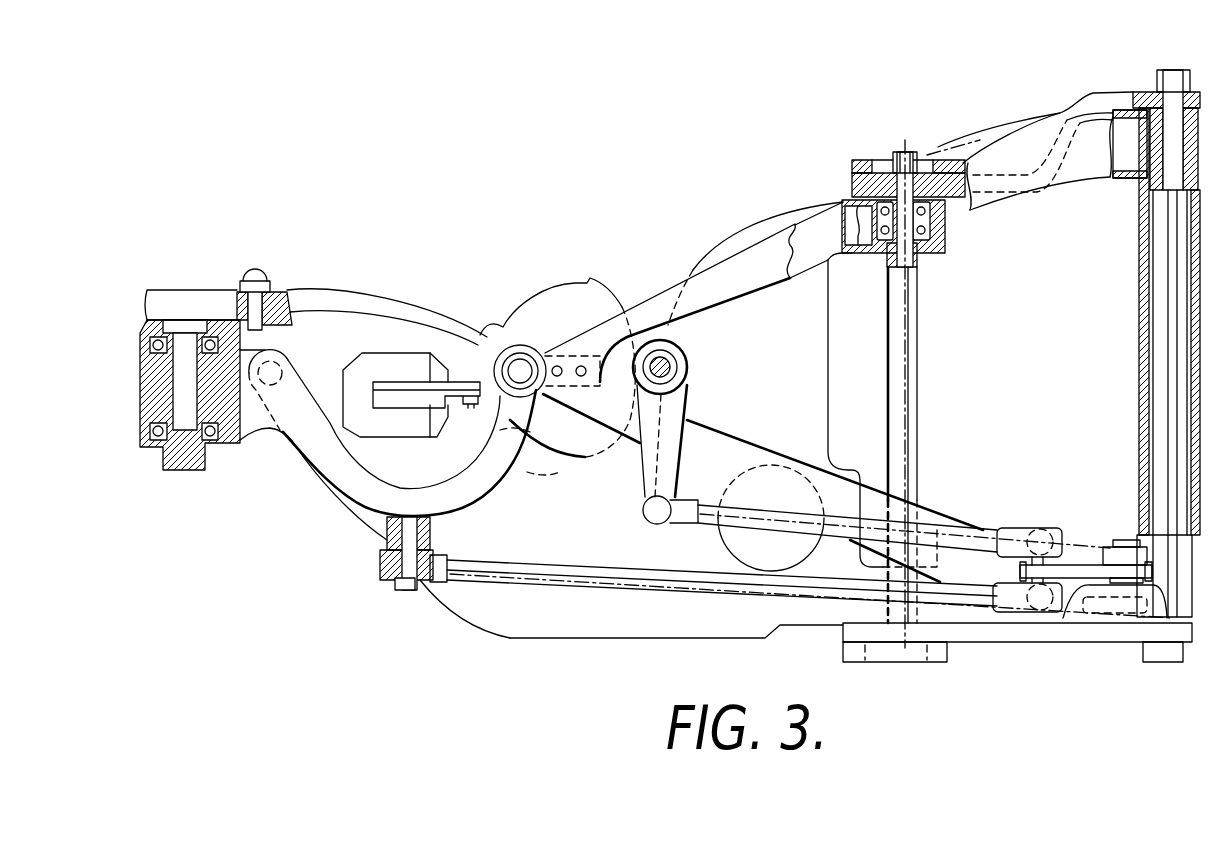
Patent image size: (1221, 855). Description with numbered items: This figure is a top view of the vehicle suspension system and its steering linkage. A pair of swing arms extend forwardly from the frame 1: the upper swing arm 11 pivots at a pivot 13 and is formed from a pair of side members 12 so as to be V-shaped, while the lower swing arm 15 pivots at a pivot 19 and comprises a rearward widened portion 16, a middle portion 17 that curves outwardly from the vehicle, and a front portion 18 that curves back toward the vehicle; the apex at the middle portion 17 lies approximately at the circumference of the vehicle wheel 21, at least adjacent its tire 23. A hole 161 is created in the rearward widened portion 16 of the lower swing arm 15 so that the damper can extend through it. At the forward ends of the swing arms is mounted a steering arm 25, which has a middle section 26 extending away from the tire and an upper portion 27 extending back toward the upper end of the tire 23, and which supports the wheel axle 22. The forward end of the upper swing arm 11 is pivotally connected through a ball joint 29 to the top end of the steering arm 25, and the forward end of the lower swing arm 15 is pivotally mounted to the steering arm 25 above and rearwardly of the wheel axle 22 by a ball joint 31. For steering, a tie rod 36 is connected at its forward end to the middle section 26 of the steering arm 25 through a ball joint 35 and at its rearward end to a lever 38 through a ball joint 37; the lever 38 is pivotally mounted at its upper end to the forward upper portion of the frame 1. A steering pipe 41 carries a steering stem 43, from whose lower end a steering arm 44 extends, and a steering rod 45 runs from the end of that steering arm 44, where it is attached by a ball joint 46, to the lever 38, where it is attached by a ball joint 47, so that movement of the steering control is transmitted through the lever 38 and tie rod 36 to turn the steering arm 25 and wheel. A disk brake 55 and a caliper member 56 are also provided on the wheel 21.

The frame 1 is at (1078, 97).
The upper swing arm 11 is at (656, 281).
The side members 12 is at (762, 257).
The pivot 13 is at (1127, 320).
The lower swing arm 15 is at (587, 640).
The rearward widened portion 16 is at (826, 376).
The middle portion 17 is at (508, 628).
The front portion 18 is at (313, 480).
The pivot 19 is at (917, 376).
The vehicle wheel 21 is at (306, 278).
The wheel axle 22 is at (178, 465).
The tire 23 is at (578, 280).
The steering arm 25 is at (340, 497).
The middle section 26 is at (433, 490).
The upper portion 27 is at (515, 452).
The ball joint 29 is at (521, 366).
The ball joint 31 is at (290, 370).
The ball joint 35 is at (388, 570).
The tie rod 36 is at (650, 595).
The ball joint 37 is at (1055, 617).
The lever 38 is at (1090, 560).
The steering pipe 41 is at (688, 362).
The steering stem 43 is at (690, 378).
The steering arm 44 is at (657, 468).
The steering rod 45 is at (763, 580).
The ball joint 46 is at (655, 518).
The ball joint 47 is at (1022, 530).
The disk brake 55 is at (425, 390).
The caliper member 56 is at (370, 357).
The hole 161 is at (745, 555).